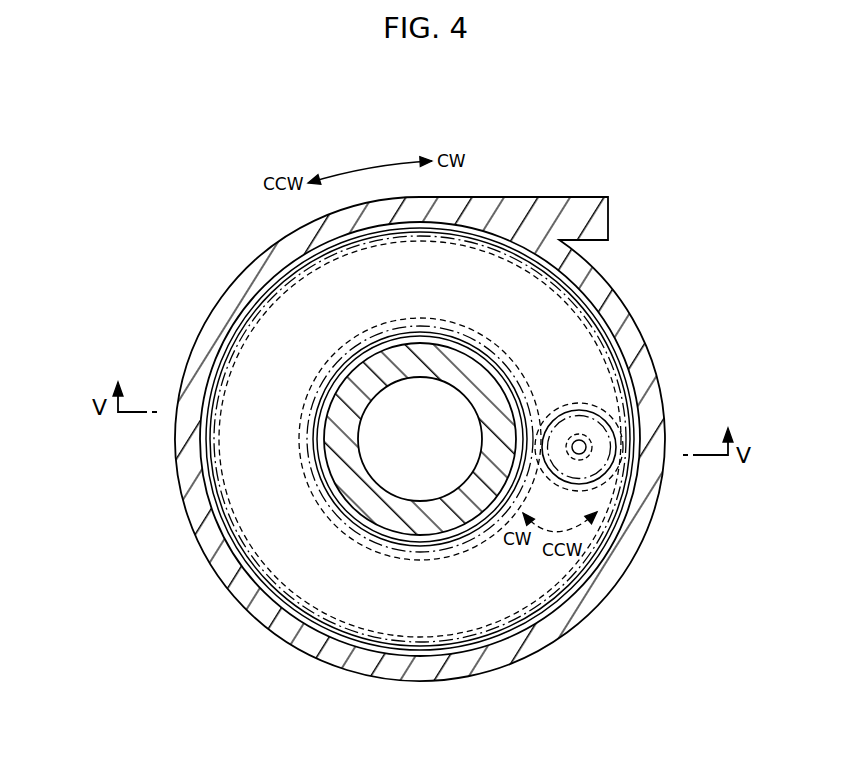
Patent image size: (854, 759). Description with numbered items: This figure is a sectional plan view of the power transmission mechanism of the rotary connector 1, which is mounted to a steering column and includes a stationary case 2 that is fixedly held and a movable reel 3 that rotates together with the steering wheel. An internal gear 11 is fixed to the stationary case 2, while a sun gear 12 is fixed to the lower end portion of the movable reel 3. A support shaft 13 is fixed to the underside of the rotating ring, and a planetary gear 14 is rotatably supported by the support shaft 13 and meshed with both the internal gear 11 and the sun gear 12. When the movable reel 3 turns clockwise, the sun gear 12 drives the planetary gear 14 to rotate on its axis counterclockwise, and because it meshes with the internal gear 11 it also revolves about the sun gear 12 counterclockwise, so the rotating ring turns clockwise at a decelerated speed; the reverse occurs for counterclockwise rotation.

The rotary connector 1 is at (443, 426).
The stationary case 2 is at (587, 267).
The movable reel 3 is at (351, 446).
The internal gear 11 is at (562, 575).
The sun gear 12 is at (493, 520).
The support shaft 13 is at (587, 442).
The planetary gear 14 is at (598, 405).